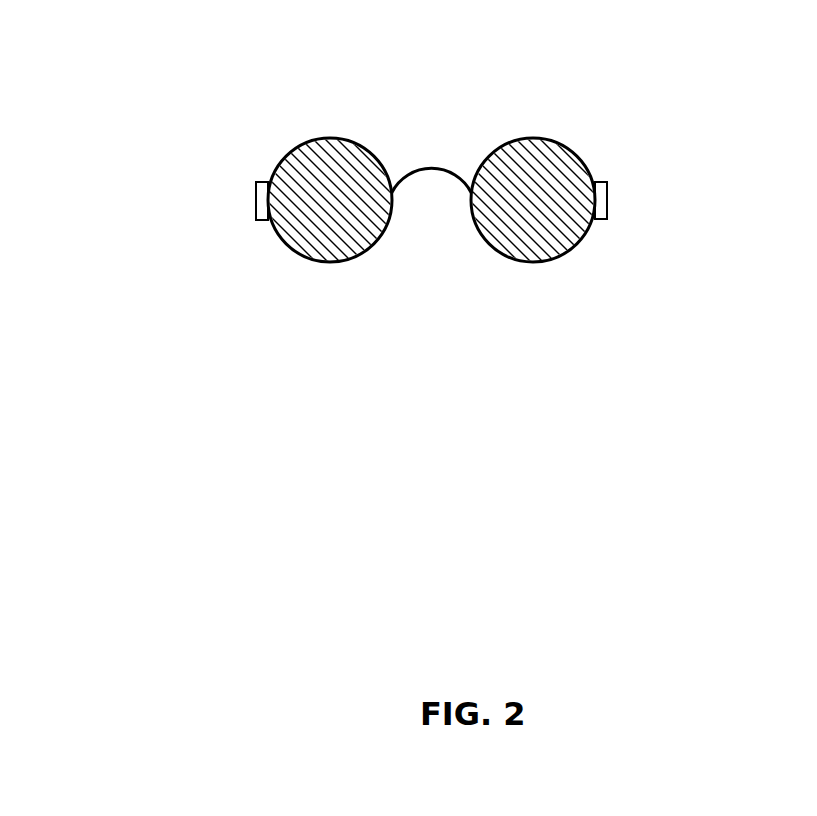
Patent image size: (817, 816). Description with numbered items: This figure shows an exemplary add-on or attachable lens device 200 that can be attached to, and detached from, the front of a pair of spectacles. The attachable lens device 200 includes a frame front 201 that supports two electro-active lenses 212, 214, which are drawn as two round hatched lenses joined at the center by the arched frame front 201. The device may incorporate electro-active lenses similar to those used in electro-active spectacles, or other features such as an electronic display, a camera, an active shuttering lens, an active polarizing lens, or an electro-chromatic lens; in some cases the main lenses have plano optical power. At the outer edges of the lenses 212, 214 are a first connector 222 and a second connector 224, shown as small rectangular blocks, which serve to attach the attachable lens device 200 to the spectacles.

The attachable lens device 200 is at (469, 485).
The frame front 201 is at (432, 170).
The electro-active lens 212 is at (272, 152).
The electro-active lens 214 is at (578, 145).
The first connector 222 is at (256, 205).
The second connector 224 is at (607, 200).